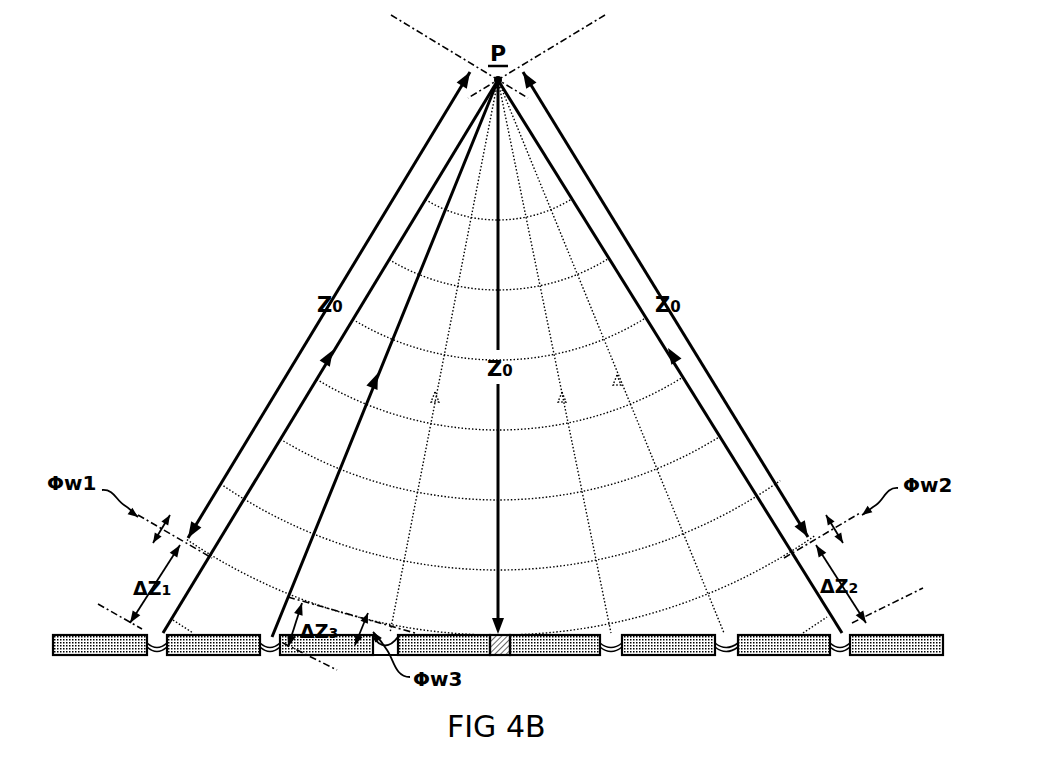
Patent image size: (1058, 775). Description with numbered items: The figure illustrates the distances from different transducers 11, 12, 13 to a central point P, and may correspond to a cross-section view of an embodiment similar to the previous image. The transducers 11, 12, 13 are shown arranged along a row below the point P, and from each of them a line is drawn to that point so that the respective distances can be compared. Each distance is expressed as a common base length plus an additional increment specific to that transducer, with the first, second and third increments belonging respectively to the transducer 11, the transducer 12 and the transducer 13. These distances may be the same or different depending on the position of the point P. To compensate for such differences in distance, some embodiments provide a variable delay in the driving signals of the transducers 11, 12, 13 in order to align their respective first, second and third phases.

The transducer 11 is at (145, 701).
The transducer 12 is at (828, 701).
The transducer 13 is at (259, 701).